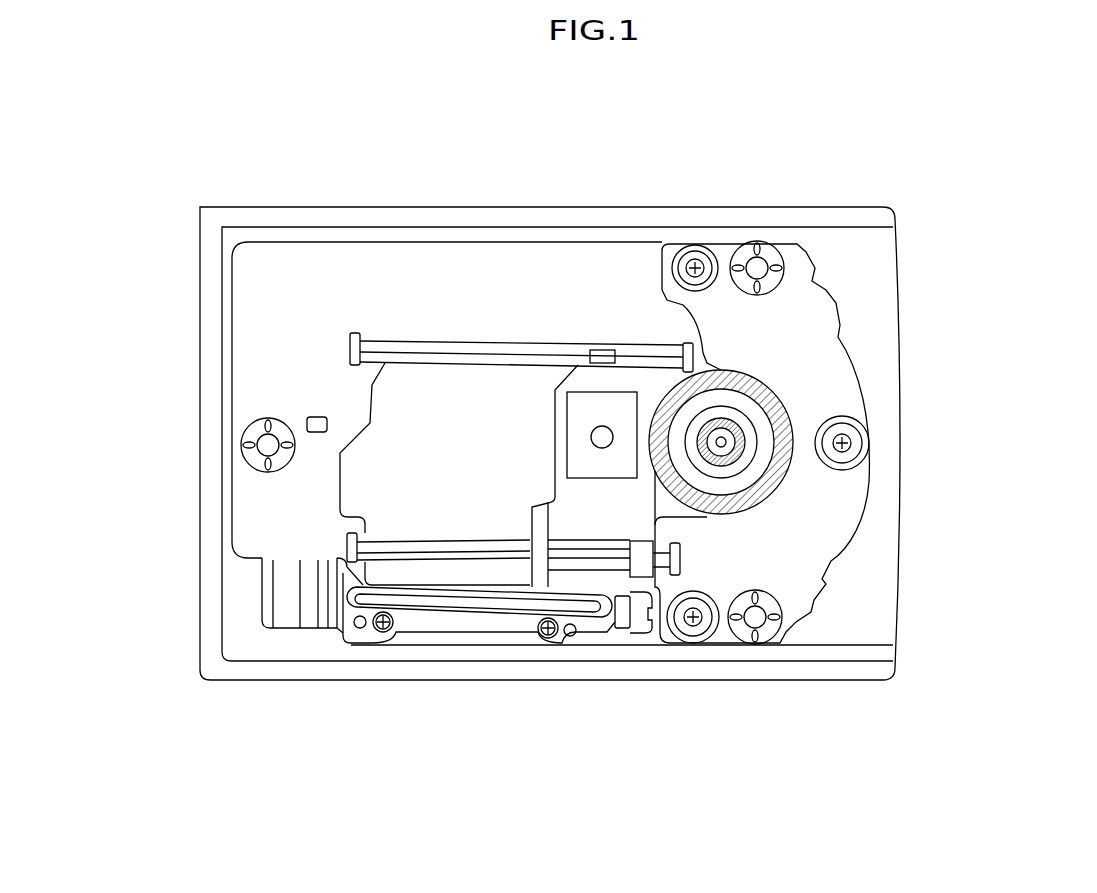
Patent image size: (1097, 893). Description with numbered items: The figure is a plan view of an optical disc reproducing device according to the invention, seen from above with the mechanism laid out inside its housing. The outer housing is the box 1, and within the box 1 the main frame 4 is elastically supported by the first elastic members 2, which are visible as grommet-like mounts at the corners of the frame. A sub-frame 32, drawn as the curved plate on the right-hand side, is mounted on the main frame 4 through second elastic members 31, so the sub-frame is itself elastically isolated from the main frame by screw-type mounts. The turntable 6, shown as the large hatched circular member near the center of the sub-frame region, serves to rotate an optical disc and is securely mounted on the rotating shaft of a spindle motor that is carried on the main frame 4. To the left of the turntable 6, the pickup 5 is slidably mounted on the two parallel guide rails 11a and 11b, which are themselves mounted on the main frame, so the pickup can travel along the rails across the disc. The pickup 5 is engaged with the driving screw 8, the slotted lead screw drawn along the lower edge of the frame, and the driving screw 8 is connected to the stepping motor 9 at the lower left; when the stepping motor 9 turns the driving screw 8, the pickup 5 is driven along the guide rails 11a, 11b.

The box 1 is at (225, 675).
The first elastic members 2 is at (765, 247).
The main frame 4 is at (255, 550).
The pickup 5 is at (574, 447).
The turntable 6 is at (773, 483).
The driving screw 8 is at (623, 623).
The stepping motor 9 is at (308, 622).
The guide rail 11a is at (432, 552).
The guide rail 11b is at (512, 353).
The second elastic members 31 is at (675, 723).
The sub-frame 32 is at (785, 588).